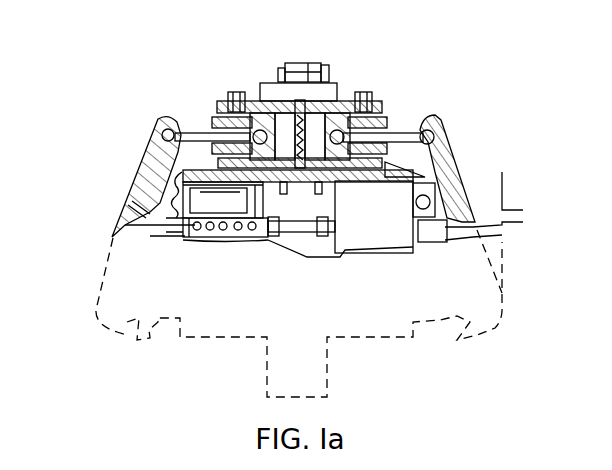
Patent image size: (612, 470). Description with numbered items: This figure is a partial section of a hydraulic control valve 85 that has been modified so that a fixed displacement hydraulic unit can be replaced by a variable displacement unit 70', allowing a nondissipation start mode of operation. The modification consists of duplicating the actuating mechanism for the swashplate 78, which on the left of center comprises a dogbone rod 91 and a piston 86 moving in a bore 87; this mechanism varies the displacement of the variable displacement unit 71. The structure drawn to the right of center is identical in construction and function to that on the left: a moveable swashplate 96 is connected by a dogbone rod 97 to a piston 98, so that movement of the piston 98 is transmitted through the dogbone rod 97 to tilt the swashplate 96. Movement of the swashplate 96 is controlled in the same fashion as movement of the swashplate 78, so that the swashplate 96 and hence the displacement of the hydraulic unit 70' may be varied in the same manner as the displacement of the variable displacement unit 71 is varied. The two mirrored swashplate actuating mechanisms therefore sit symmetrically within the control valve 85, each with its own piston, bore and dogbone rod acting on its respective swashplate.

The variable displacement unit 70' is at (423, 197).
The variable displacement unit 71 is at (200, 173).
The swashplate 78 is at (142, 182).
The hydraulic control valve 85 is at (342, 66).
The piston 86 is at (287, 113).
The bore 87 is at (291, 98).
The dogbone rod 91 is at (205, 128).
The swashplate 96 is at (446, 150).
The dogbone rod 97 is at (407, 130).
The piston 98 is at (340, 113).